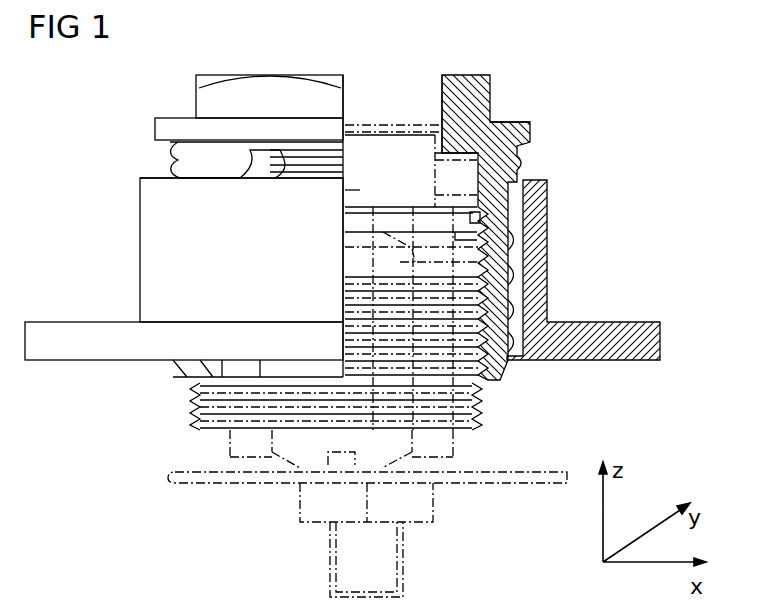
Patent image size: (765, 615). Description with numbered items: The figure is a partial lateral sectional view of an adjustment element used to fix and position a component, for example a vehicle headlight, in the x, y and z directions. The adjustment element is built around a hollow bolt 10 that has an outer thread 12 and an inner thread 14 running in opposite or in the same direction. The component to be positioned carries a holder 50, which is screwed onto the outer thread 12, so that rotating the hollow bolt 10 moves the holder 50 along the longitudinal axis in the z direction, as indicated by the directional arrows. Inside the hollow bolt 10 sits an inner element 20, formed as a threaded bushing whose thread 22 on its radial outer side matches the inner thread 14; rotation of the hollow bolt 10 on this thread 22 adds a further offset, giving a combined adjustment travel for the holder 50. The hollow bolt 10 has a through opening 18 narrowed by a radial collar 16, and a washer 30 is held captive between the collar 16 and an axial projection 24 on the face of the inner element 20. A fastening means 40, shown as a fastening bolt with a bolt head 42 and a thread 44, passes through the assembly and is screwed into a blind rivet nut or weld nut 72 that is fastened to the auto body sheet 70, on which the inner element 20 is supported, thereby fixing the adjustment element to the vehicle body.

The hollow bolt 10 is at (463, 86).
The outer thread 12 is at (175, 160).
The inner thread 14 is at (512, 277).
The radial collar 16 is at (462, 144).
The through opening 18 is at (385, 86).
The inner element 20 is at (483, 384).
The thread 22 is at (480, 418).
The axial projection 24 is at (423, 260).
The washer 30 is at (345, 224).
The fastening means 40 is at (398, 142).
The bolt head 42 is at (345, 190).
The thread 44 is at (404, 578).
The holder 50 is at (150, 265).
The auto body sheet 70 is at (220, 480).
The weld nut 72 is at (433, 500).